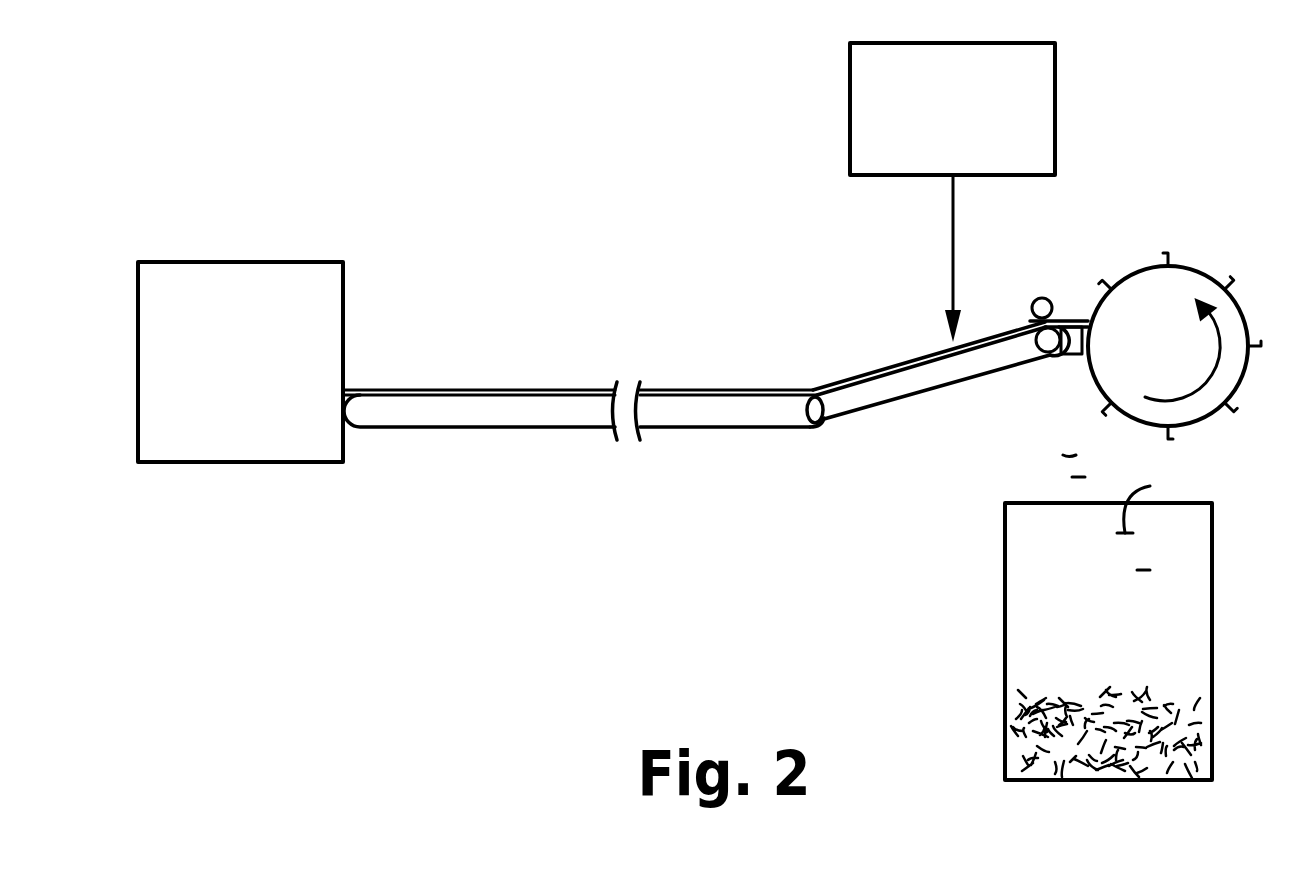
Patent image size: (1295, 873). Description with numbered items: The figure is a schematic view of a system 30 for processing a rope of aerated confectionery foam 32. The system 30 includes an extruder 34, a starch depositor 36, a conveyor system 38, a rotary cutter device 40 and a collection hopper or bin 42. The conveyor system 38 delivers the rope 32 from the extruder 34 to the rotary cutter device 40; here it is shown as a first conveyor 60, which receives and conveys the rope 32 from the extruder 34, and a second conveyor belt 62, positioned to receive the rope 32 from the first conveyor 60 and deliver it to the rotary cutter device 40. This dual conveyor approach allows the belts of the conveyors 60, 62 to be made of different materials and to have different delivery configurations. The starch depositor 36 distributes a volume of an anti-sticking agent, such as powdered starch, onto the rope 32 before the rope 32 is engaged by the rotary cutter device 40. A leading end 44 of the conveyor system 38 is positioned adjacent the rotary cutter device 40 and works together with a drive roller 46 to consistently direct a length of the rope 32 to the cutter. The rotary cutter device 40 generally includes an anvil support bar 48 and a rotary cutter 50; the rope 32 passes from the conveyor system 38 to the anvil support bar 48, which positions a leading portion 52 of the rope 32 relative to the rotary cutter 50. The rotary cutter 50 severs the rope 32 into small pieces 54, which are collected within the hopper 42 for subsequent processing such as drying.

The system 30 is at (598, 148).
The rope of aerated confectionery foam 32 is at (446, 382).
The extruder 34 is at (343, 290).
The starch depositor 36 is at (1055, 88).
The conveyor system 38 is at (725, 436).
The rotary cutter device 40 is at (1212, 238).
The collection hopper or bin 42 is at (1213, 628).
The leading end 44 is at (1043, 350).
The drive roller 46 is at (1043, 297).
The anvil support bar 48 is at (1071, 354).
The rotary cutter 50 is at (1240, 314).
The leading portion 52 is at (1073, 320).
The pieces 54 is at (1104, 488).
The first conveyor 60 is at (459, 420).
The second conveyor belt 62 is at (929, 383).